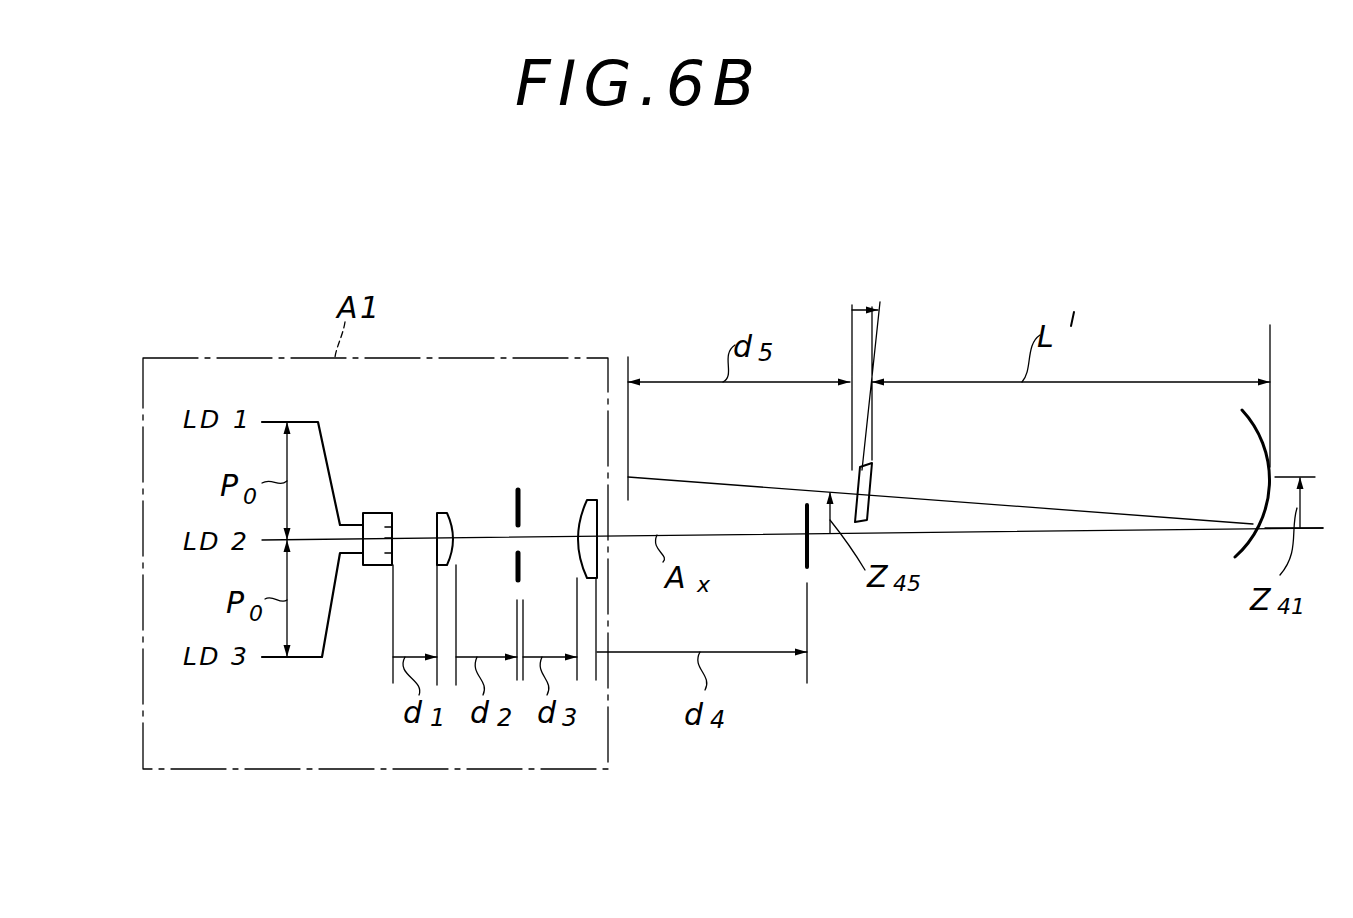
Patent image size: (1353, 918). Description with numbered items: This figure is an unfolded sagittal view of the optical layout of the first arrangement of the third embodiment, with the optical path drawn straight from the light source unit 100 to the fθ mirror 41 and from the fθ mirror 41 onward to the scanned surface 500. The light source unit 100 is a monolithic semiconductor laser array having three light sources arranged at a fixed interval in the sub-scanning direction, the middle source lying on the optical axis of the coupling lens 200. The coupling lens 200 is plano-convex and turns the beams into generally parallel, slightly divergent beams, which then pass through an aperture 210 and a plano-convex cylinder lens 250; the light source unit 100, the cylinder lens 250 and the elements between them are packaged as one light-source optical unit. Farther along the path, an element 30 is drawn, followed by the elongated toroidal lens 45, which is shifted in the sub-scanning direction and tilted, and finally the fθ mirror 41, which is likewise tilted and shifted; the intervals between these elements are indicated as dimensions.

The light source unit 100 is at (377, 513).
The coupling lens 200 is at (443, 513).
The aperture 210 is at (518, 503).
The cylinder lens 250 is at (590, 500).
The scanned surface 500 is at (628, 357).
The aperture / slit 30 is at (810, 547).
The elongated toroidal lens 45 is at (870, 486).
The fθ mirror 41 is at (1257, 431).